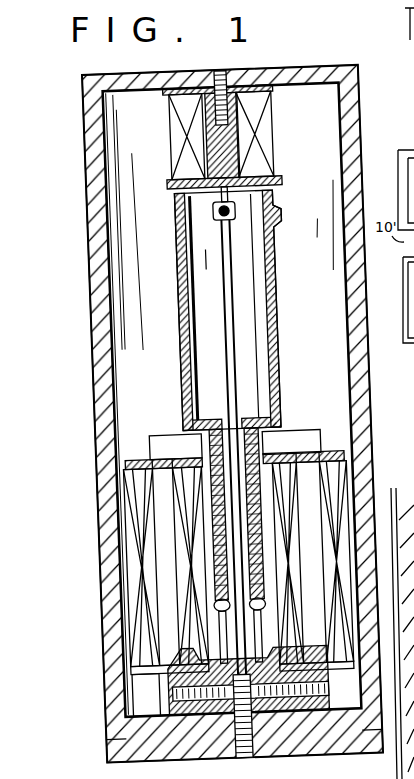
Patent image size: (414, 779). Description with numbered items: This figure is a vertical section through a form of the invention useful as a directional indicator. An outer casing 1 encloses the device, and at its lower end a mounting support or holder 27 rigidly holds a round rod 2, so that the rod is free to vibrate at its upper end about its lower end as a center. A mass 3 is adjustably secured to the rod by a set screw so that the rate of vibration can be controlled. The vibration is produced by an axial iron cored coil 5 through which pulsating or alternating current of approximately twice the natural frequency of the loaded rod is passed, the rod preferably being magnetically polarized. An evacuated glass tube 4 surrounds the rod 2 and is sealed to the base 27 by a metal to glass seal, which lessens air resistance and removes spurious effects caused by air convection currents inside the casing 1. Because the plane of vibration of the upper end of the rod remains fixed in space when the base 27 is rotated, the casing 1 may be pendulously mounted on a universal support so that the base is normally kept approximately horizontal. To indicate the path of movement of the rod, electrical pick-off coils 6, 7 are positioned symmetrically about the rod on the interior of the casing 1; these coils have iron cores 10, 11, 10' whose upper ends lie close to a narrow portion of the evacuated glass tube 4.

The outer casing 1 is at (82, 139).
The round rod 2 is at (216, 290).
The mass 3 is at (208, 214).
The evacuated glass tube 4 is at (170, 333).
The axial iron cored coil 5 is at (169, 158).
The electrical pick-off coil 6 is at (102, 527).
The electrical pick-off coil 7 is at (331, 472).
The iron core 10 is at (187, 536).
The iron core 10' is at (260, 530).
The iron core 11 is at (288, 438).
The mounting support or holder 27 is at (261, 742).